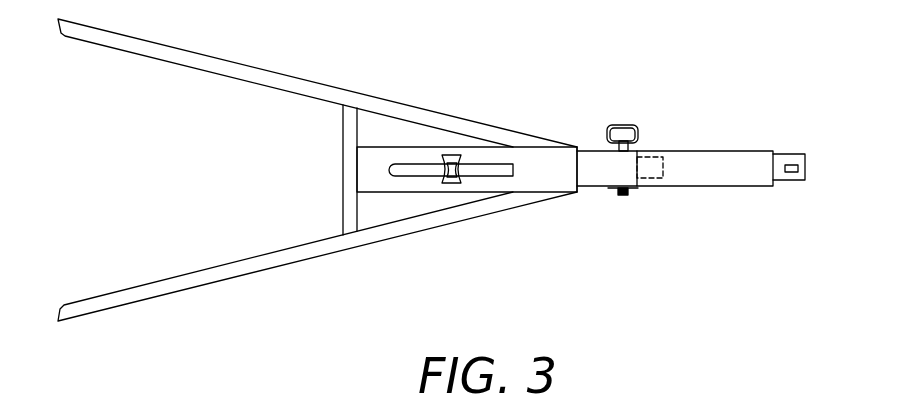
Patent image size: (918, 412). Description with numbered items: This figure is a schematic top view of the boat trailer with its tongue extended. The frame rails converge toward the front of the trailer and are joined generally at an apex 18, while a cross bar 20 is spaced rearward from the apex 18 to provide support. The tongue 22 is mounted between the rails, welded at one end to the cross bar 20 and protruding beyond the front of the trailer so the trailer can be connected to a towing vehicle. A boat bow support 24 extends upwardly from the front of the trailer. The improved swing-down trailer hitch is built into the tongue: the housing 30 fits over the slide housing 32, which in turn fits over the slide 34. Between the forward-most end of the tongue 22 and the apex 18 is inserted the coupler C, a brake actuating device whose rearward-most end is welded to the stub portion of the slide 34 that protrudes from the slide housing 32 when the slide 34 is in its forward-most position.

The apex 18 is at (567, 197).
The cross bar 20 is at (353, 160).
The tongue 22 is at (527, 158).
The boat bow support 24 is at (450, 156).
The housing 30 is at (538, 182).
The slide housing 32 is at (610, 172).
The slide 34 is at (649, 160).
The coupler C is at (773, 187).